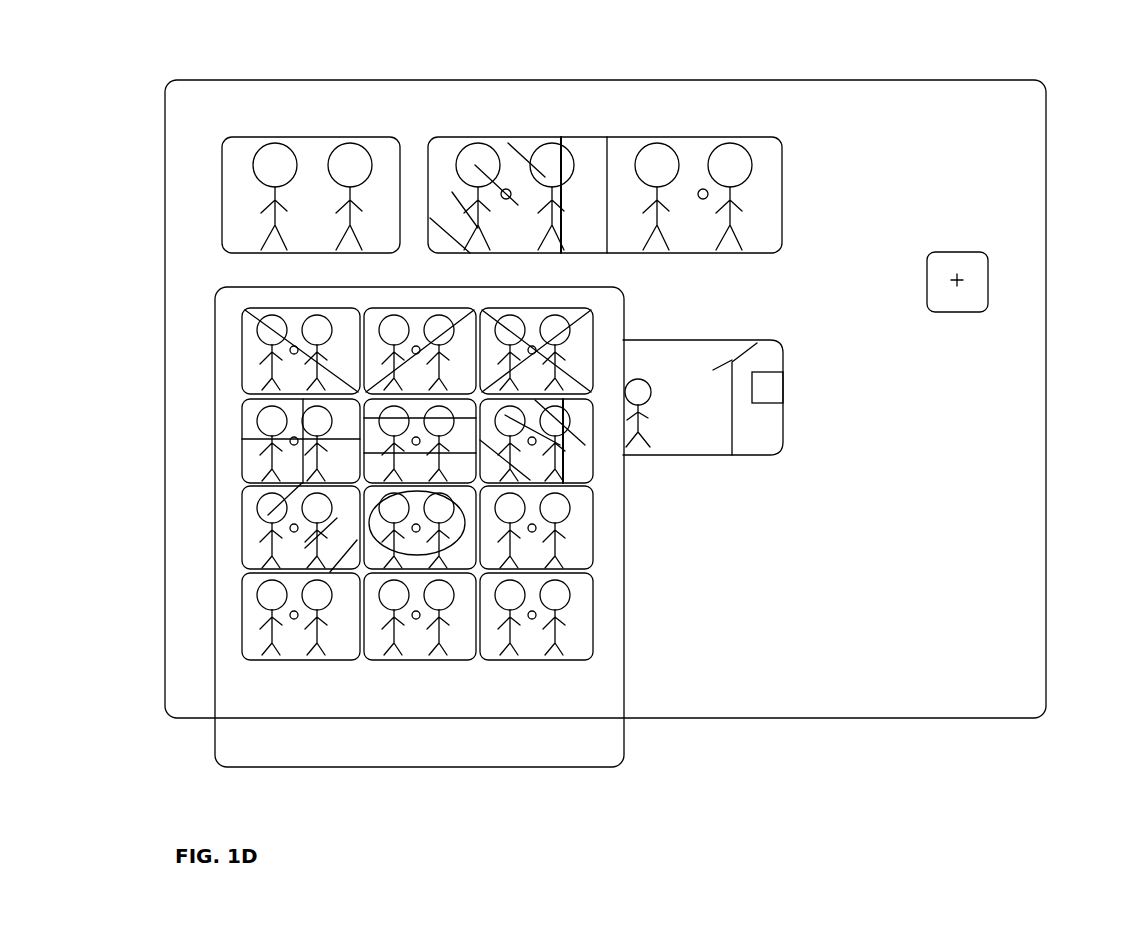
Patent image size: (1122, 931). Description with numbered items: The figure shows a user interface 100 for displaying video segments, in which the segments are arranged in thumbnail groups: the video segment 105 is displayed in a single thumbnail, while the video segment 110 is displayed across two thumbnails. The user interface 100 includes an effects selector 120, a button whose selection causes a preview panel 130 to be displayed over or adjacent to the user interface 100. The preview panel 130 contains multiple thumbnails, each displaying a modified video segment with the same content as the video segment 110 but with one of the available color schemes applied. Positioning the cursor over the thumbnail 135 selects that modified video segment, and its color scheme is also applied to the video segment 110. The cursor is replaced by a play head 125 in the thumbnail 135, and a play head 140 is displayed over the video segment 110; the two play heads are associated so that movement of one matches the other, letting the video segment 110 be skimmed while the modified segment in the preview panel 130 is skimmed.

The user interface 100 is at (165, 116).
The video segment 105 is at (222, 203).
The video segment 110 is at (538, 140).
The effects selector 120 is at (990, 278).
The play head 125 is at (563, 417).
The preview panel 130 is at (626, 742).
The thumbnail 135 is at (588, 437).
The play head 140 is at (561, 186).